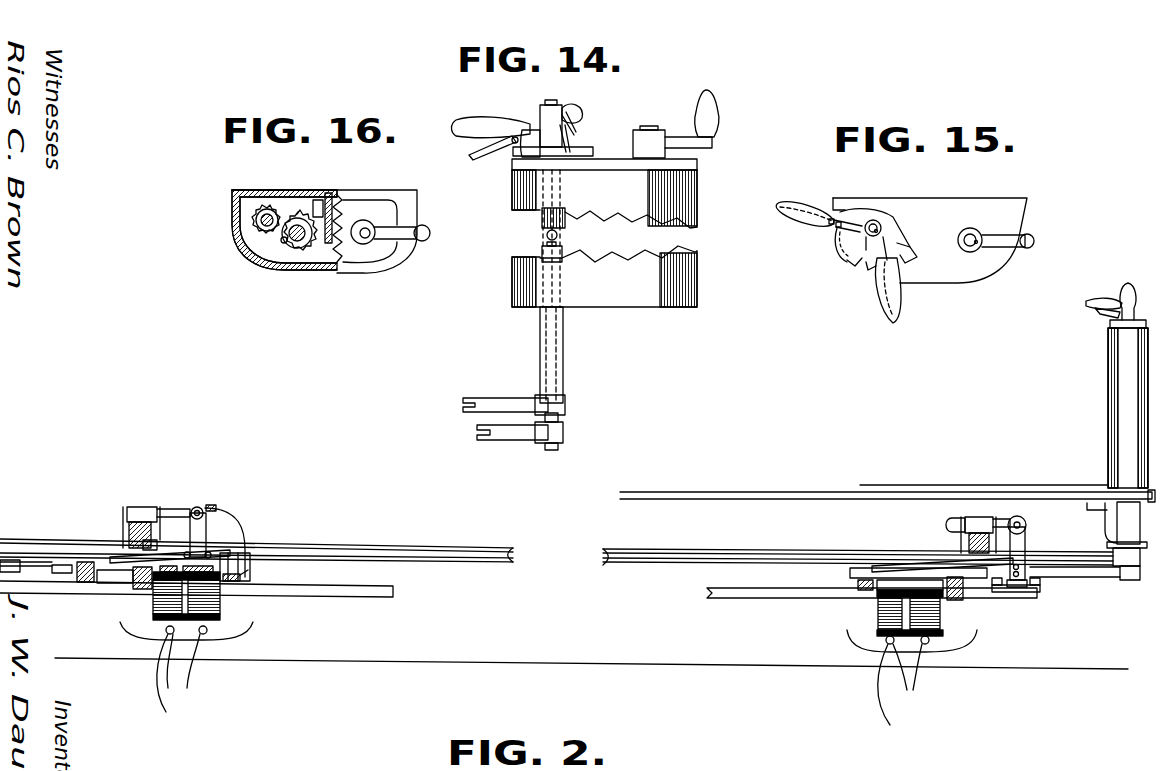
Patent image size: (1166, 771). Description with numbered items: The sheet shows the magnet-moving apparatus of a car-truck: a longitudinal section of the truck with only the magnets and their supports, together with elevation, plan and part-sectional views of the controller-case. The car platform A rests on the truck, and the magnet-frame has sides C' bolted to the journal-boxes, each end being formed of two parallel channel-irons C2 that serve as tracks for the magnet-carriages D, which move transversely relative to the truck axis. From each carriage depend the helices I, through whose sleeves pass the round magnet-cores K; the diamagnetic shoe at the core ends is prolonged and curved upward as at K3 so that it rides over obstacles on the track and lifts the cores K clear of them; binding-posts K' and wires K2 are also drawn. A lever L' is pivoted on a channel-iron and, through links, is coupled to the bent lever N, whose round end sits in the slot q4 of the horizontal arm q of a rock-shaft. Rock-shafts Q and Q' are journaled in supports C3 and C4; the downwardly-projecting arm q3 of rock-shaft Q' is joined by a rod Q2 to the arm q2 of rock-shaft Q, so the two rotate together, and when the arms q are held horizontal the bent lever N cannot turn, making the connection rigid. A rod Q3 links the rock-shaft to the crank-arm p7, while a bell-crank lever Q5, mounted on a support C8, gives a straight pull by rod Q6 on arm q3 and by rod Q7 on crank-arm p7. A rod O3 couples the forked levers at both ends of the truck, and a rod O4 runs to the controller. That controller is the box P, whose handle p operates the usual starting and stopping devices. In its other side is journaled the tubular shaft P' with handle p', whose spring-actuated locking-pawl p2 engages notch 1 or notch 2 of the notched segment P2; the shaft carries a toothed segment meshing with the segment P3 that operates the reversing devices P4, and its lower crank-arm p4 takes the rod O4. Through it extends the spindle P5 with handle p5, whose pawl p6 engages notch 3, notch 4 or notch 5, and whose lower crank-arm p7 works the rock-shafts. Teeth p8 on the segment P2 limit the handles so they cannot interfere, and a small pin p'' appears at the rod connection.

In FIG. 16, the box P is at (324, 249).
In FIG. 14, the box P is at (613, 233).
In FIG. 15, the box P is at (930, 259).
In FIG. 2, the box P is at (1116, 434).
In FIG. 16, the tubular shaft P' is at (209, 204).
In FIG. 14, the tubular shaft P' is at (568, 355).
In FIG. 14, the notched segment P2 is at (580, 152).
In FIG. 15, the notched segment P2 is at (850, 235).
In FIG. 16, the segment P3 is at (262, 238).
In FIG. 16, the reversing devices P4 is at (299, 231).
In FIG. 16, the spindle P5 is at (268, 209).
In FIG. 14, the spindle P5 is at (548, 243).
In FIG. 15, the spindle P5 is at (873, 222).
In FIG. 2, the spindle P5 is at (1141, 560).
In FIG. 16, the handle p is at (401, 237).
In FIG. 14, the handle p is at (686, 124).
In FIG. 15, the handle p is at (1007, 242).
In FIG. 2, the handle p is at (1126, 282).
In FIG. 14, the handle p' is at (496, 122).
In FIG. 15, the handle p' is at (796, 198).
In FIG. 2, the bracket pin p'' is at (1139, 559).
In FIG. 14, the spring-actuated locking-pawl p2 is at (512, 148).
In FIG. 15, the spring-actuated locking-pawl p2 is at (830, 217).
In FIG. 14, the crank-arm p4 is at (492, 397).
In FIG. 14, the handle p5 is at (567, 112).
In FIG. 15, the handle p5 is at (901, 310).
In FIG. 2, the handle p5 is at (1095, 300).
In FIG. 14, the spring-actuated locking-pawl p6 is at (577, 123).
In FIG. 2, the spring-actuated locking-pawl p6 is at (1106, 313).
In FIG. 14, the crank-arm p7 is at (504, 433).
In FIG. 2, the crank-arm p7 is at (1123, 578).
In FIG. 14, the teeth p8 is at (593, 150).
In FIG. 15, the teeth p8 is at (908, 246).
In FIG. 15, the notch 1 is at (837, 223).
In FIG. 15, the notch 2 is at (819, 253).
In FIG. 14, the notch 3 is at (527, 165).
In FIG. 15, the notch 3 is at (861, 268).
In FIG. 14, the notch 4 is at (562, 157).
In FIG. 15, the notch 4 is at (893, 267).
In FIG. 14, the notch 5 is at (580, 158).
In FIG. 15, the notch 5 is at (910, 254).
In FIG. 2, the platform A is at (960, 492).
In FIG. 2, the bent lever N is at (135, 510).
In FIG. 2, the horizontal arm q is at (165, 510).
In FIG. 2, the downwardly-projecting arm q2 is at (1025, 542).
In FIG. 2, the downwardly-projecting arm q3 is at (205, 533).
In FIG. 2, the slot q4 is at (946, 524).
In FIG. 2, the rock-shaft Q is at (1029, 546).
In FIG. 2, the rock-shaft Q' is at (197, 511).
In FIG. 2, the rod Q2 is at (513, 562).
In FIG. 2, the rod Q3 is at (1066, 572).
In FIG. 2, the bell-crank lever Q5 is at (64, 575).
In FIG. 2, the rod Q6 is at (110, 560).
In FIG. 2, the rod Q7 is at (15, 566).
In FIG. 2, the rod O3 is at (515, 547).
In FIG. 2, the rod O4 is at (61, 540).
In FIG. 2, the sides of magnet-frame C' is at (518, 604).
In FIG. 2, the channel-irons C2 is at (240, 580).
In FIG. 2, the support C3 is at (1020, 588).
In FIG. 2, the support C4 is at (237, 514).
In FIG. 2, the support C8 is at (115, 560).
In FIG. 2, the magnet-carriage D is at (153, 607).
In FIG. 2, the helices I is at (220, 610).
In FIG. 2, the lever L' is at (561, 550).
In FIG. 2, the magnet-cores K is at (544, 666).
In FIG. 2, the binding post K' is at (550, 666).
In FIG. 2, the magnet wire K2 is at (540, 683).
In FIG. 2, the upwardly-curved shoe extension K3 is at (125, 630).